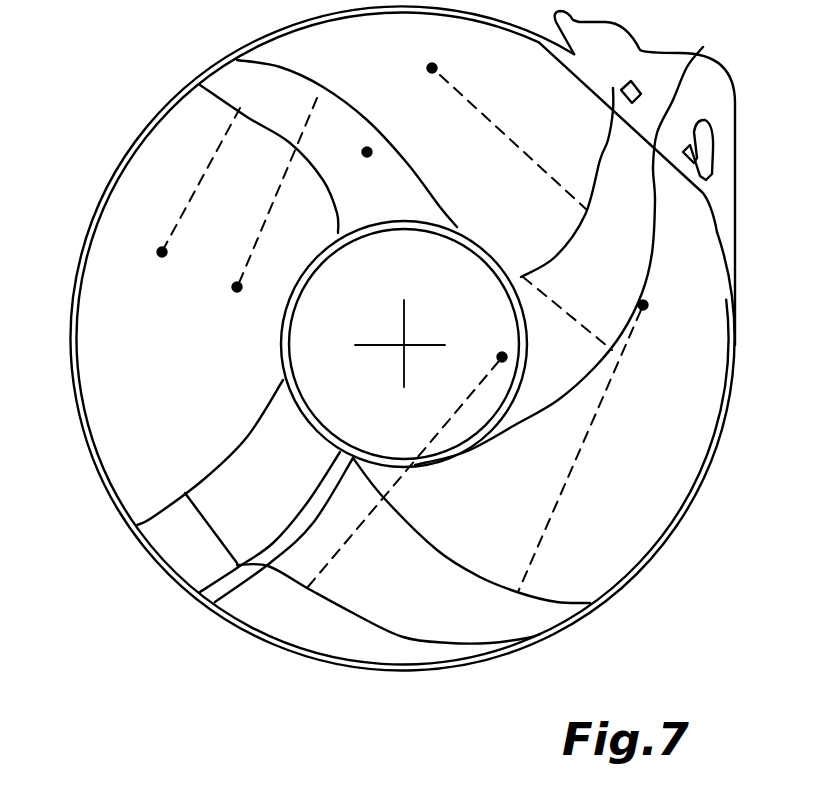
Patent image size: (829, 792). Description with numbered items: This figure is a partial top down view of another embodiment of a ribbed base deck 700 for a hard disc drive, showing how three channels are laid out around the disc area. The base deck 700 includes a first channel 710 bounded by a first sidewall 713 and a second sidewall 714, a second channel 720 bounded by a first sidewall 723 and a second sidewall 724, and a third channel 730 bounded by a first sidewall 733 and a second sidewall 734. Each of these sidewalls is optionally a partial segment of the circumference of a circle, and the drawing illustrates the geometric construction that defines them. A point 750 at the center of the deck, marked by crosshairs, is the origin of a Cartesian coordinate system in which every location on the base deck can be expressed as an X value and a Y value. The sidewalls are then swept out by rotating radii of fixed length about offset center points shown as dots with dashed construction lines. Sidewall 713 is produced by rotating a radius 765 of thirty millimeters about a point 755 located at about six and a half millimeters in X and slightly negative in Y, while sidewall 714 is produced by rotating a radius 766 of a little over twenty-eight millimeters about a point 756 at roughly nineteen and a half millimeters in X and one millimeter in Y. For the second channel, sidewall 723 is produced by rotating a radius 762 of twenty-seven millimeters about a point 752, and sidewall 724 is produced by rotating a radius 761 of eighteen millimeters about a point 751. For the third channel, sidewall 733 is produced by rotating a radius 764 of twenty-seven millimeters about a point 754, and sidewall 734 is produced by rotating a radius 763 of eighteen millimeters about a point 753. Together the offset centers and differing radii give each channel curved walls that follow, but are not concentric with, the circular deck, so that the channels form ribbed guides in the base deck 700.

The ribbed base deck 700 is at (201, 661).
The first channel 710 is at (492, 610).
The first sidewall 713 is at (405, 638).
The second sidewall 714 is at (437, 548).
The second channel 720 is at (700, 47).
The first sidewall 723 is at (652, 256).
The second sidewall 724 is at (608, 152).
The third channel 730 is at (263, 90).
The first sidewall 733 is at (340, 88).
The second sidewall 734 is at (284, 137).
The point 750 is at (403, 343).
The point 751 is at (433, 66).
The point 752 is at (367, 152).
The point 753 is at (163, 251).
The point 754 is at (238, 285).
The point 755 is at (502, 357).
The point 756 is at (643, 305).
The radius 761 is at (562, 180).
The radius 762 is at (548, 298).
The radius 763 is at (200, 181).
The radius 764 is at (266, 214).
The radius 765 is at (388, 492).
The radius 766 is at (570, 474).